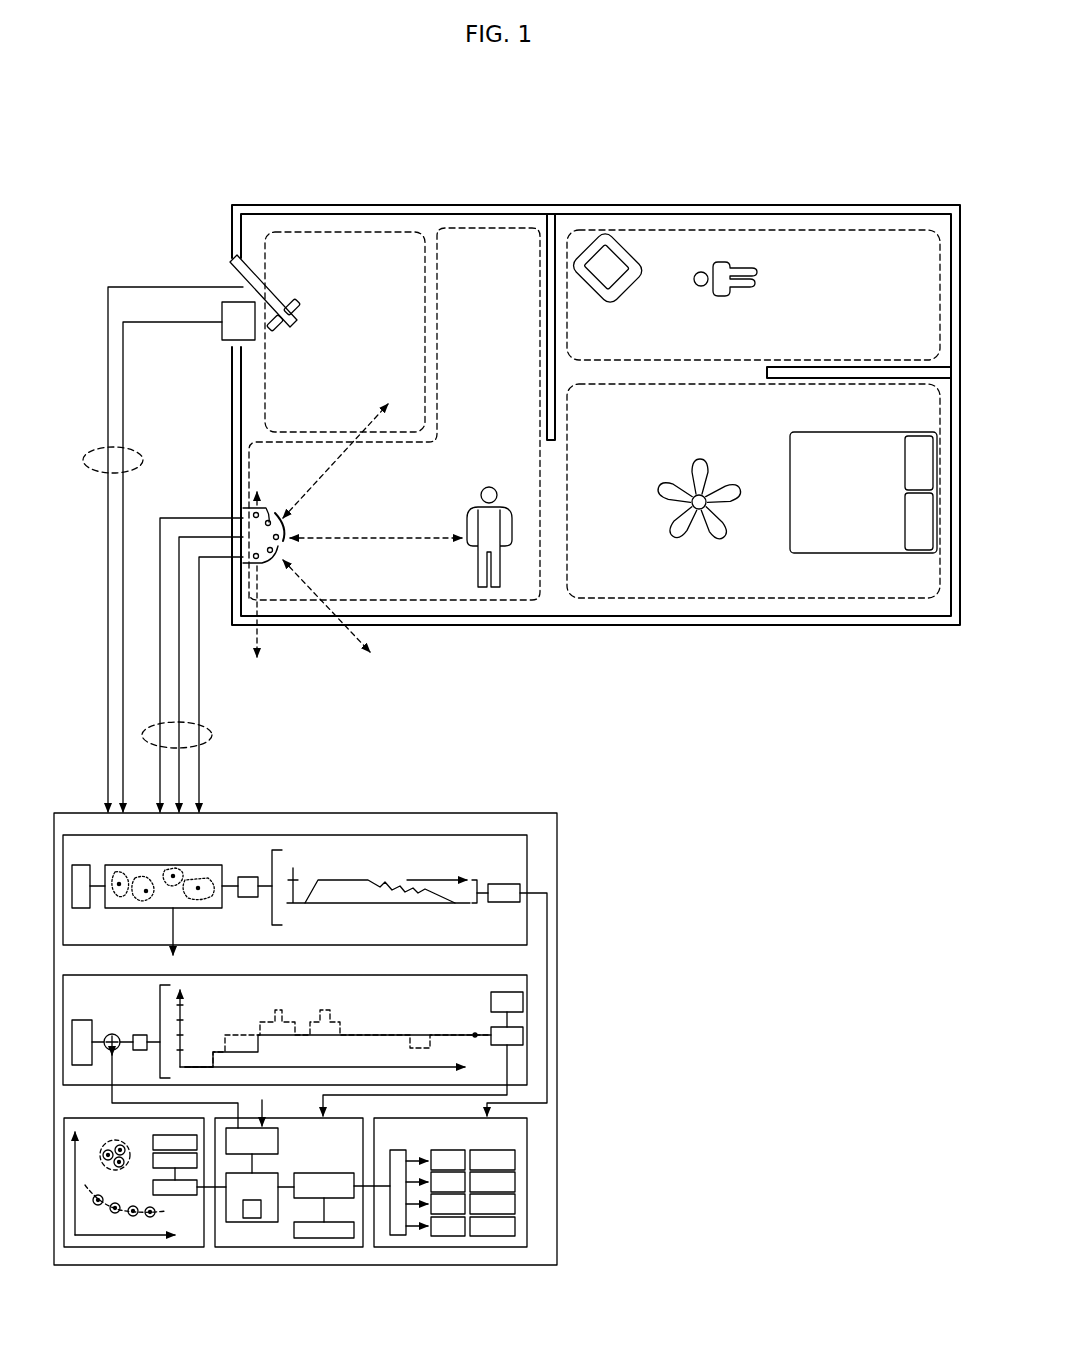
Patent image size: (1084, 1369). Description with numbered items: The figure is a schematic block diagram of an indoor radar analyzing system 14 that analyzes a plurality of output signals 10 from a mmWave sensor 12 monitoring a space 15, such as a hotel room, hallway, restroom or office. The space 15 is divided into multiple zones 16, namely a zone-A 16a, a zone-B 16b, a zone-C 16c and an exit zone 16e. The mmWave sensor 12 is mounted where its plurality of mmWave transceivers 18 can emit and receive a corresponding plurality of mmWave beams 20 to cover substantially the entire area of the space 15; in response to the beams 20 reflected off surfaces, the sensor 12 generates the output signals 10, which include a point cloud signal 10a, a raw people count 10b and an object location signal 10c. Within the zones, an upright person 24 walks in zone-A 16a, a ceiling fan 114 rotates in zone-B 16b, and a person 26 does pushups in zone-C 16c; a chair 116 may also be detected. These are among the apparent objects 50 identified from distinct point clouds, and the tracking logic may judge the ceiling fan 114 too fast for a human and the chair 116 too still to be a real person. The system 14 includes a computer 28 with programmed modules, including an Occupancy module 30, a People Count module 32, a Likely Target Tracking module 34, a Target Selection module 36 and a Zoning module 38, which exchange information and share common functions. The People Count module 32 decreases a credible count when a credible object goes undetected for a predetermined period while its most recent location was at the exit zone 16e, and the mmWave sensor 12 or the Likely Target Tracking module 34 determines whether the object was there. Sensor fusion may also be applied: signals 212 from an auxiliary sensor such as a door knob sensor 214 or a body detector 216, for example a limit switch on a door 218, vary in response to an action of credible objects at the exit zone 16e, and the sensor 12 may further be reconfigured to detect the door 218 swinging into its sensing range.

The output signals 10 is at (194, 549).
The point cloud signal 10a is at (201, 776).
The raw people count 10b is at (181, 705).
The object location signal 10c is at (194, 514).
The mmWave sensor 12 is at (307, 515).
The system 14 is at (640, 953).
The space 15 is at (664, 235).
The zones 16 is at (462, 228).
The zone-A 16a is at (423, 600).
The zone-B 16b is at (763, 600).
The zone-C 16c is at (851, 230).
The exit zone 16e is at (322, 232).
The mmWave transceivers 18 is at (270, 512).
The mmWave beams 20 is at (337, 455).
The upright person 24 is at (487, 486).
The person doing pushups 26 is at (730, 300).
The computer 28 is at (557, 1142).
The Occupancy module 30 is at (557, 863).
The People Count module 32 is at (395, 975).
The Likely Target Tracking module 34 is at (125, 1247).
The Target Selection module 36 is at (287, 1247).
The Zoning module 38 is at (466, 1247).
The apparent objects 50 is at (230, 262).
The ceiling fan 114 is at (660, 490).
The chair 116 is at (615, 295).
The signals 212 is at (83, 460).
The door knob sensor 214 is at (288, 325).
The body detector 216 is at (220, 328).
The door 218 is at (268, 292).